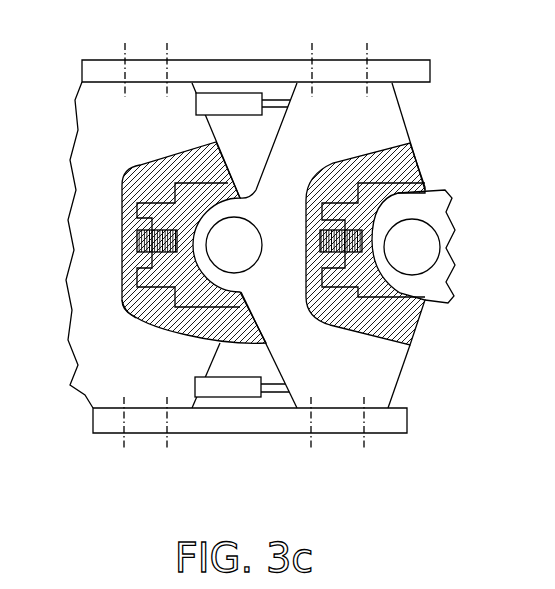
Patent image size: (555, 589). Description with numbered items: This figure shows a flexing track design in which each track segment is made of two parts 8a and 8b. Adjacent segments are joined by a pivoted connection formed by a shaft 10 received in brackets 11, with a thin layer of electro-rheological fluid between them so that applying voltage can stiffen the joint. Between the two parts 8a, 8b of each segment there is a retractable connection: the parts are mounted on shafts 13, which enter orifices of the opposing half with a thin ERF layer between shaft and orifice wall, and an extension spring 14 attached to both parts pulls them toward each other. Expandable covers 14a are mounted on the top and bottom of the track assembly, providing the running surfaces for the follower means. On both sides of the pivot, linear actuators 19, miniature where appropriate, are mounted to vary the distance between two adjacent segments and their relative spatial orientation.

The segment part 8a is at (102, 123).
The segment part 8b is at (413, 190).
The shaft 10 is at (212, 238).
The bracket 11 is at (128, 312).
The shaft 13 is at (155, 202).
The extension spring 14 is at (370, 243).
The expandable cover 14a is at (408, 70).
The linear actuator 19 is at (207, 100).